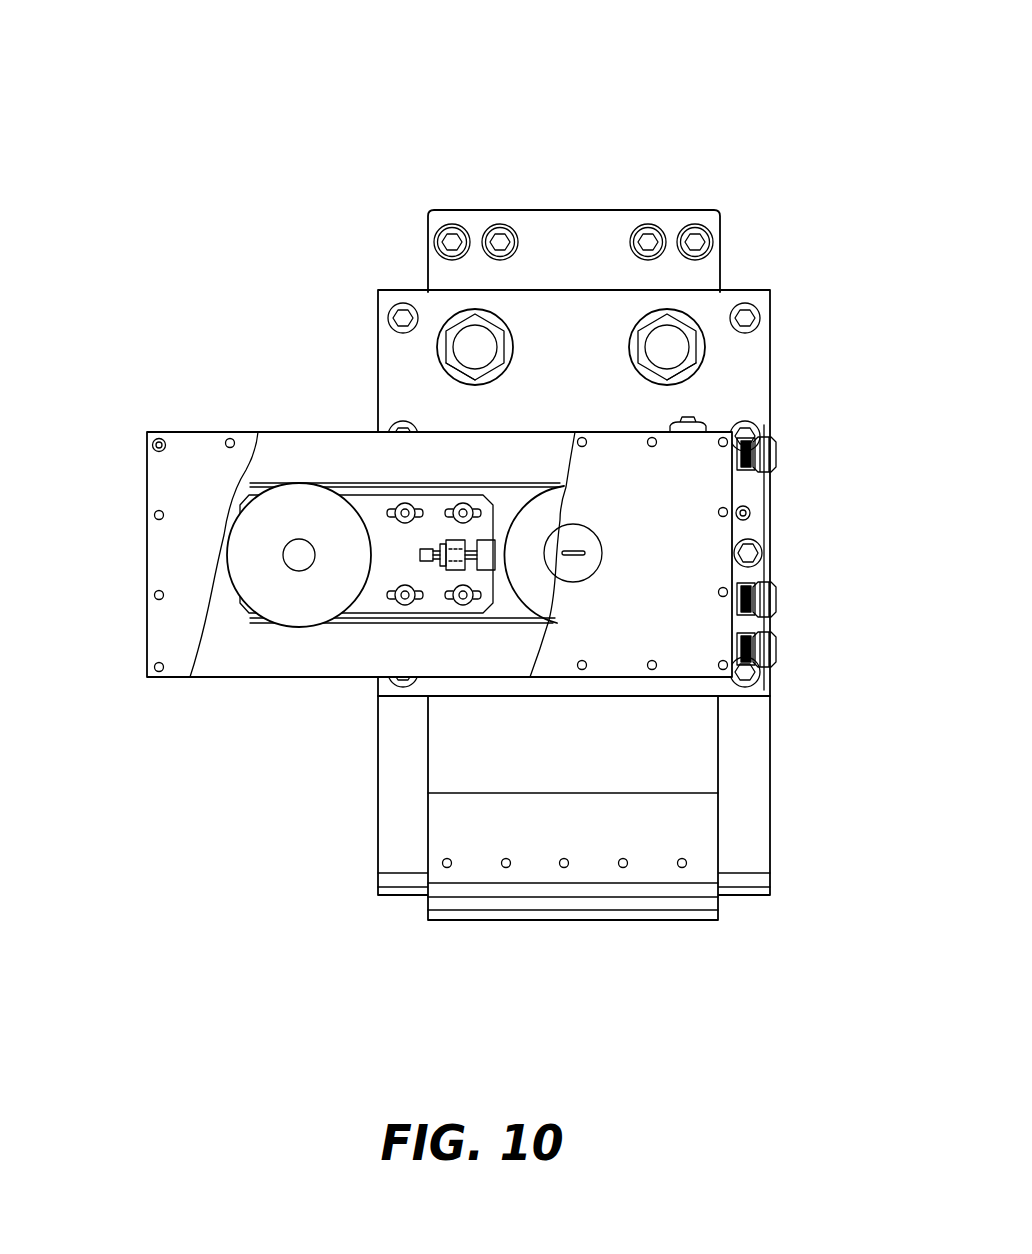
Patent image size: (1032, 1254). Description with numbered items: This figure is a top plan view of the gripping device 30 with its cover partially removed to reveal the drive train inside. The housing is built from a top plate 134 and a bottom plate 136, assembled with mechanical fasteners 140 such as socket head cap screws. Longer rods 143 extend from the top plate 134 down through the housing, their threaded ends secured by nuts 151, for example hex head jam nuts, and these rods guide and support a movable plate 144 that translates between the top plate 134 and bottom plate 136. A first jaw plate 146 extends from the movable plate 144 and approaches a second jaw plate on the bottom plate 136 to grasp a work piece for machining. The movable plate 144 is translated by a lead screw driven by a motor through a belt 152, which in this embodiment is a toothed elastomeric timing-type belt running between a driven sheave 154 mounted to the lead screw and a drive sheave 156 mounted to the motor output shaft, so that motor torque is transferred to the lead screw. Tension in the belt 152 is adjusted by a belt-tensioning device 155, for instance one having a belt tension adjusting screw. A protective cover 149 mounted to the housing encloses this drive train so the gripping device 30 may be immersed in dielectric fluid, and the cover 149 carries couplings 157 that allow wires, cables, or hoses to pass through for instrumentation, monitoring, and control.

The gripping device 30 is at (629, 108).
The top plate 134 is at (745, 380).
The bottom plate 136 is at (745, 793).
The mechanical fasteners 140 is at (400, 318).
The rods 143 is at (477, 345).
The movable plate 144 is at (573, 222).
The first jaw plate 146 is at (573, 915).
The protective cover 149 is at (162, 553).
The nuts 151 is at (477, 370).
The belt 152 is at (407, 488).
The driven sheave 154 is at (295, 508).
The belt-tensioning device 155 is at (383, 572).
The drive sheave 156 is at (541, 508).
The couplings 157 is at (776, 453).